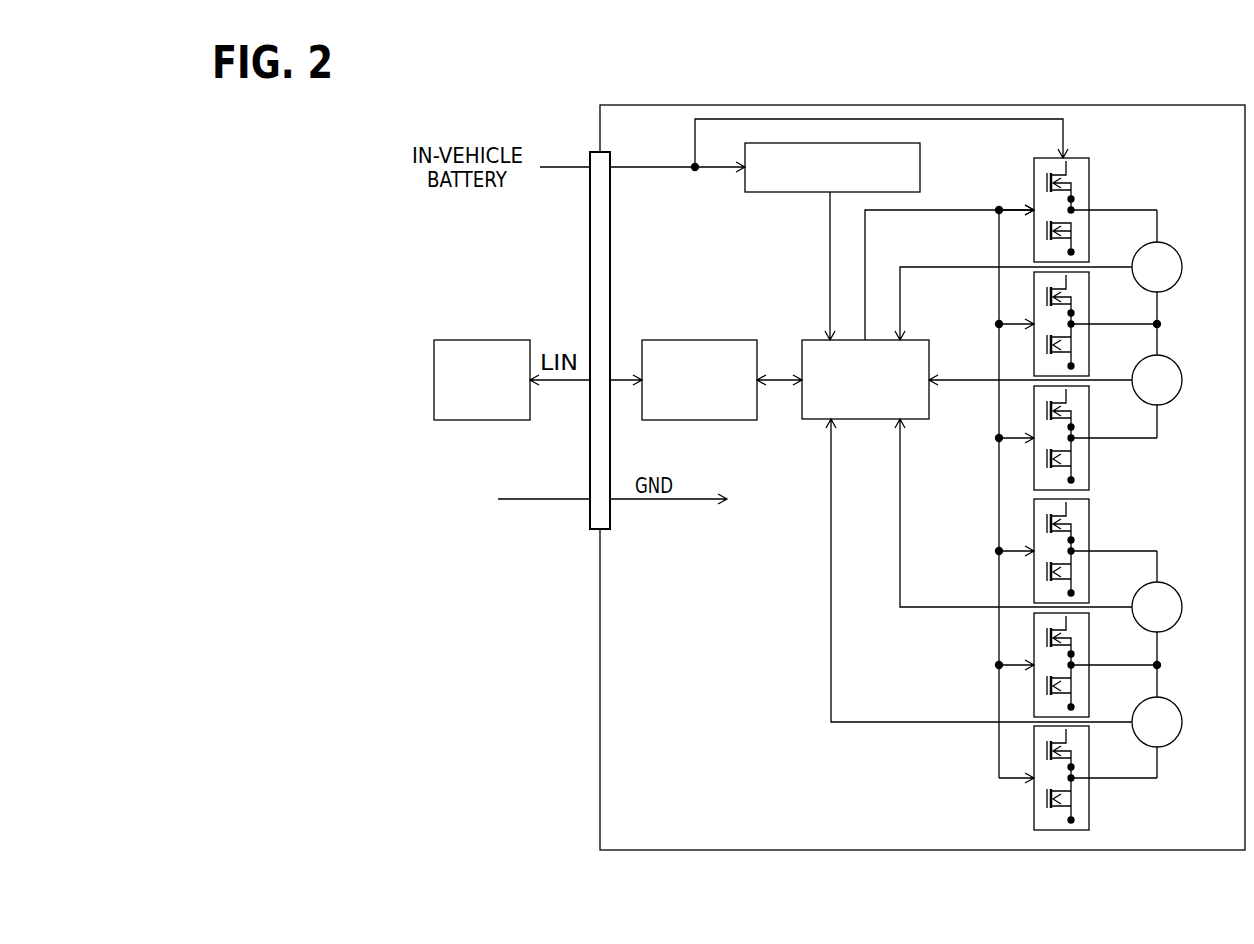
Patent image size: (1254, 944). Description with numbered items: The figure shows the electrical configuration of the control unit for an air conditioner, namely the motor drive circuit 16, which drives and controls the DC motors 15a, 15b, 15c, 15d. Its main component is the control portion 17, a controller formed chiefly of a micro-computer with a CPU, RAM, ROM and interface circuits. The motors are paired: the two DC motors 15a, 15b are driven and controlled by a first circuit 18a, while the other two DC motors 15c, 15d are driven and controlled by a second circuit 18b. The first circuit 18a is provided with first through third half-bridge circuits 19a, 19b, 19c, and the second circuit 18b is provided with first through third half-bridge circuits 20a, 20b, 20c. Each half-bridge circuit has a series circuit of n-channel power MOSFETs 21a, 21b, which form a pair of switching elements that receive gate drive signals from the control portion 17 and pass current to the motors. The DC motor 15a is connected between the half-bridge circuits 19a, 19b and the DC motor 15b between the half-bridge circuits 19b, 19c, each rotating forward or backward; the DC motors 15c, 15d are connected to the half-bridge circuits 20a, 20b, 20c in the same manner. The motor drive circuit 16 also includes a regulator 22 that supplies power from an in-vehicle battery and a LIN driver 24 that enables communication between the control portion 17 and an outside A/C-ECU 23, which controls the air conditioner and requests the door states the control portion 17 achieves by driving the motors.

The motor drive circuit 16 is at (1176, 104).
The control portion 17 is at (912, 338).
The first circuit 18a is at (1124, 180).
The second circuit 18b is at (1159, 537).
The first half-bridge circuit 19a is at (1052, 189).
The second half-bridge circuit 19b is at (1090, 303).
The third half-bridge circuit 19c is at (1090, 466).
The first half-bridge circuit 20a is at (1090, 515).
The second half-bridge circuit 20b is at (1090, 647).
The third half-bridge circuit 20c is at (1090, 810).
The n-channel power MOSFET 21a is at (1040, 181).
The n-channel power MOSFET 21b is at (1040, 226).
The DC motor 15a is at (1183, 266).
The DC motor 15b is at (1183, 379).
The DC motor 15c is at (1183, 606).
The DC motor 15d is at (1183, 721).
The regulator 22 is at (790, 194).
The A/C-ECU 23 is at (482, 338).
The LIN driver 24 is at (707, 338).